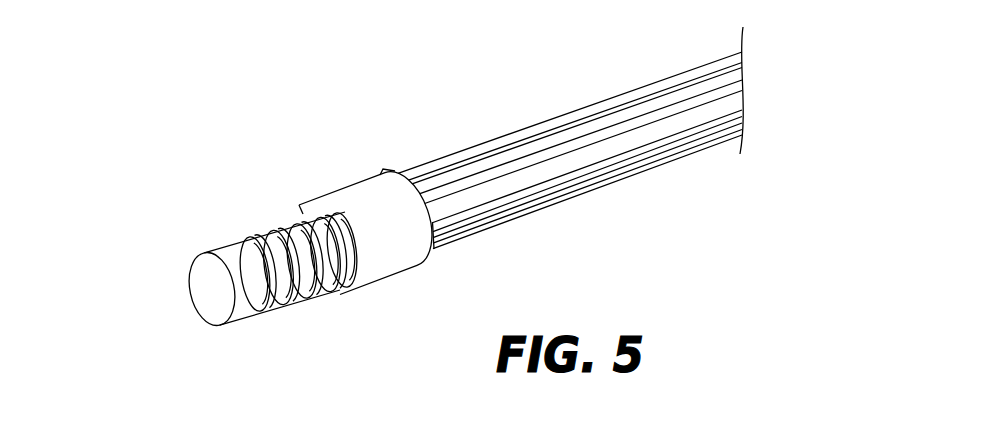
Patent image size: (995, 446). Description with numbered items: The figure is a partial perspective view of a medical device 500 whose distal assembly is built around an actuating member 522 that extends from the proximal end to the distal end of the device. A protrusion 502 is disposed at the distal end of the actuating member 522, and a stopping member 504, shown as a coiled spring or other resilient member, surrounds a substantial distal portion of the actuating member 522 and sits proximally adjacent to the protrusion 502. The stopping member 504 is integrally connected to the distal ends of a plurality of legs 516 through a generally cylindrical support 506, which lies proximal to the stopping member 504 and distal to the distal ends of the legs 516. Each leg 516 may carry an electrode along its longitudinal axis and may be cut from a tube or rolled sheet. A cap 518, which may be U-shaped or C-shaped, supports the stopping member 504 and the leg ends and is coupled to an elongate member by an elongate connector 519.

The medical device 500 is at (143, 81).
The protrusion 502 is at (207, 297).
The stopping member 504 is at (242, 237).
The support 506 is at (374, 198).
The legs 516 is at (459, 154).
The cap 518 is at (322, 197).
The elongate connector 519 is at (633, 133).
The actuating member 522 is at (334, 295).